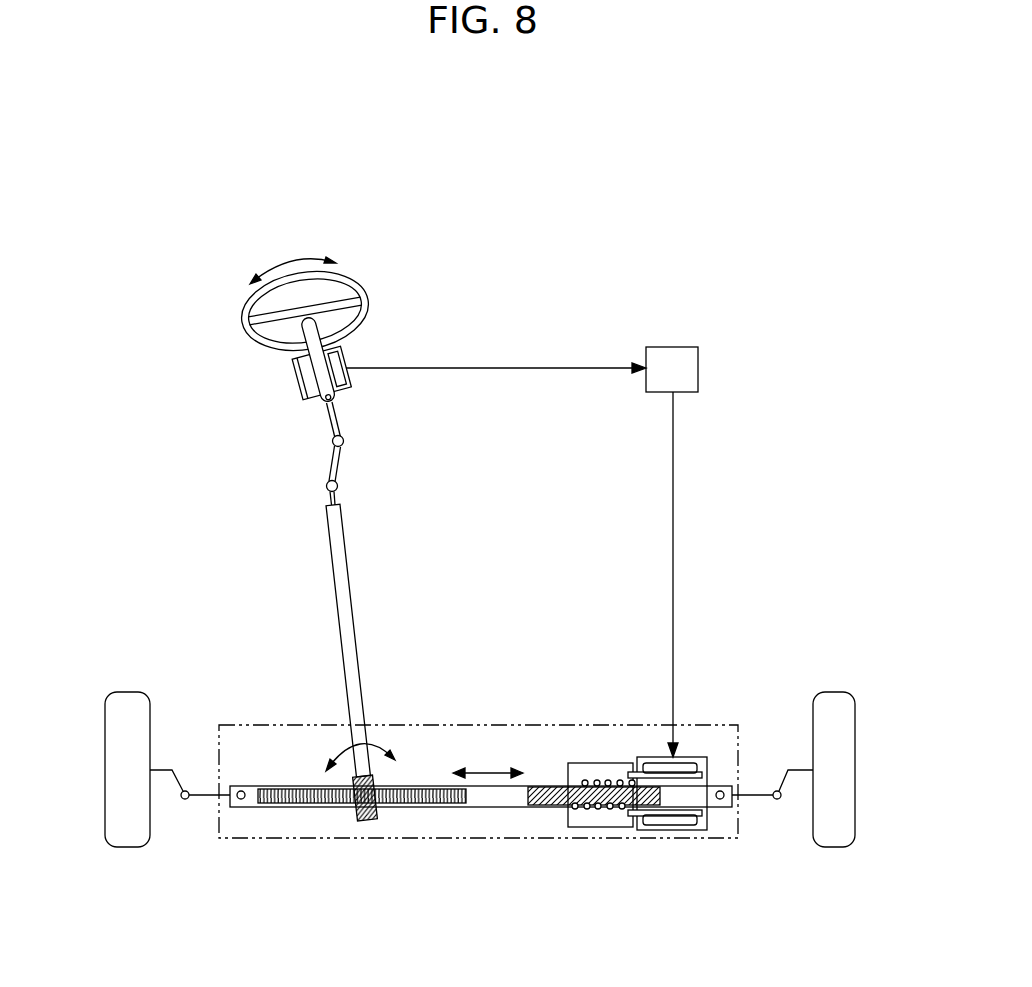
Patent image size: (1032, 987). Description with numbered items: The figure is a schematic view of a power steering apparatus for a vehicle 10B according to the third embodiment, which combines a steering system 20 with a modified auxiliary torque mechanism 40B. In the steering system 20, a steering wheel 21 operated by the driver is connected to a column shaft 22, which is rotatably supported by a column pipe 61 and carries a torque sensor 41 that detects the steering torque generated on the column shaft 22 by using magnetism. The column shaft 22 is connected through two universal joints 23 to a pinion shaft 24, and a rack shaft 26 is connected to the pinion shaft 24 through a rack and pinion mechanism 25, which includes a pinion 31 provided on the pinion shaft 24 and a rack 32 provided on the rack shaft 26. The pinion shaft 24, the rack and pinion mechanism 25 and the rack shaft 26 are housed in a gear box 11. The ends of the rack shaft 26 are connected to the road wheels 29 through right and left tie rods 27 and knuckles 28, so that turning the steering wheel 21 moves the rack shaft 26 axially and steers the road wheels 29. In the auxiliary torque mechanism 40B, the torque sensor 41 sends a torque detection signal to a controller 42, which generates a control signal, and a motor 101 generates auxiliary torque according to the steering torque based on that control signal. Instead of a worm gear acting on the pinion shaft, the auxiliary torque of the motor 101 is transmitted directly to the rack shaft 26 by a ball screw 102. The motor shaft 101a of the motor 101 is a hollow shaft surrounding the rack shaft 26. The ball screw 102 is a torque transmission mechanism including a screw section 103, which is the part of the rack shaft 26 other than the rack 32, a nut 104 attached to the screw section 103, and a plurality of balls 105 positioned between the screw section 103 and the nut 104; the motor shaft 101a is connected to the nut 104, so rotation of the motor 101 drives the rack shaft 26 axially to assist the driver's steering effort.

The power steering apparatus for a vehicle 10B is at (392, 164).
The steering system 20 is at (372, 272).
The auxiliary torque mechanism 40B is at (606, 330).
The steering wheel 21 is at (245, 324).
The column shaft 22 is at (300, 375).
The column pipe 61 is at (296, 395).
The torque sensor 41 is at (348, 377).
The controller 42 is at (673, 360).
The universal joints 23 is at (333, 443).
The pinion shaft 24 is at (338, 585).
The gear box 11 is at (292, 725).
The rack and pinion mechanism 25 is at (440, 922).
The pinion 31 is at (367, 822).
The rack 32 is at (443, 806).
The rack shaft 26 is at (492, 795).
The tie rods 27 is at (210, 797).
The knuckles 28 is at (177, 785).
The road wheels 29 is at (126, 836).
The motor 101 is at (708, 768).
The motor shaft 101a is at (690, 772).
The ball screw 102 is at (502, 922).
The screw section 103 is at (548, 806).
The nut 104 is at (590, 827).
The balls 105 is at (612, 808).